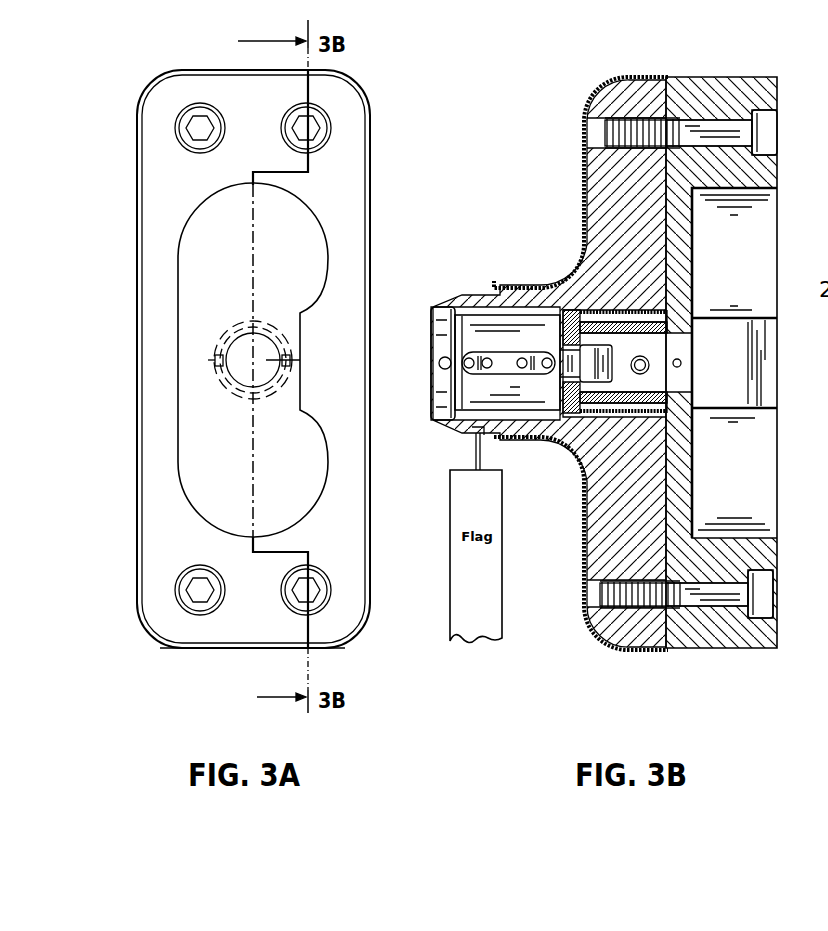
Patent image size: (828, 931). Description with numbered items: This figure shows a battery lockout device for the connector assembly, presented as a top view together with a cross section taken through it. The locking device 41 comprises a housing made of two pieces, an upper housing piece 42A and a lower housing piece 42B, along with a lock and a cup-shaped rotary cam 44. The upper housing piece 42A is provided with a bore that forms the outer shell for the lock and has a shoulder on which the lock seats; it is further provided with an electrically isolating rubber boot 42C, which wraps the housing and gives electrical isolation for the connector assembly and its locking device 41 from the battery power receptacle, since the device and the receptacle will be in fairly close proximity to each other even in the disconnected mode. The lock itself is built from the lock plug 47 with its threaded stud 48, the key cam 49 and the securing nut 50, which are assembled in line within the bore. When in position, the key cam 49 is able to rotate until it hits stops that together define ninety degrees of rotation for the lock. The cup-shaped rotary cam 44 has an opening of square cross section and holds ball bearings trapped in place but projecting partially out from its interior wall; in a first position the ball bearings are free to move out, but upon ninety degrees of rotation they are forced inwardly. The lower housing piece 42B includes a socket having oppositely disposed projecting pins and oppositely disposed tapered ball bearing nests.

In FIG. 3B, the locking device 41 is at (626, 409).
In FIG. 3B, the upper housing piece 42A is at (628, 637).
In FIG. 3A, the lower housing piece 42B is at (223, 627).
In FIG. 3B, the lower housing piece 42B is at (717, 637).
In FIG. 3A, the electrically isolating rubber boot 42C is at (370, 148).
In FIG. 3B, the electrically isolating rubber boot 42C is at (582, 138).
In FIG. 3B, the cup-shaped rotary cam 44 is at (603, 310).
In FIG. 3B, the lock plug 47 is at (482, 338).
In FIG. 3B, the threaded stud 48 is at (612, 384).
In FIG. 3B, the key cam 49 is at (568, 308).
In FIG. 3B, the securing nut 50 is at (588, 386).